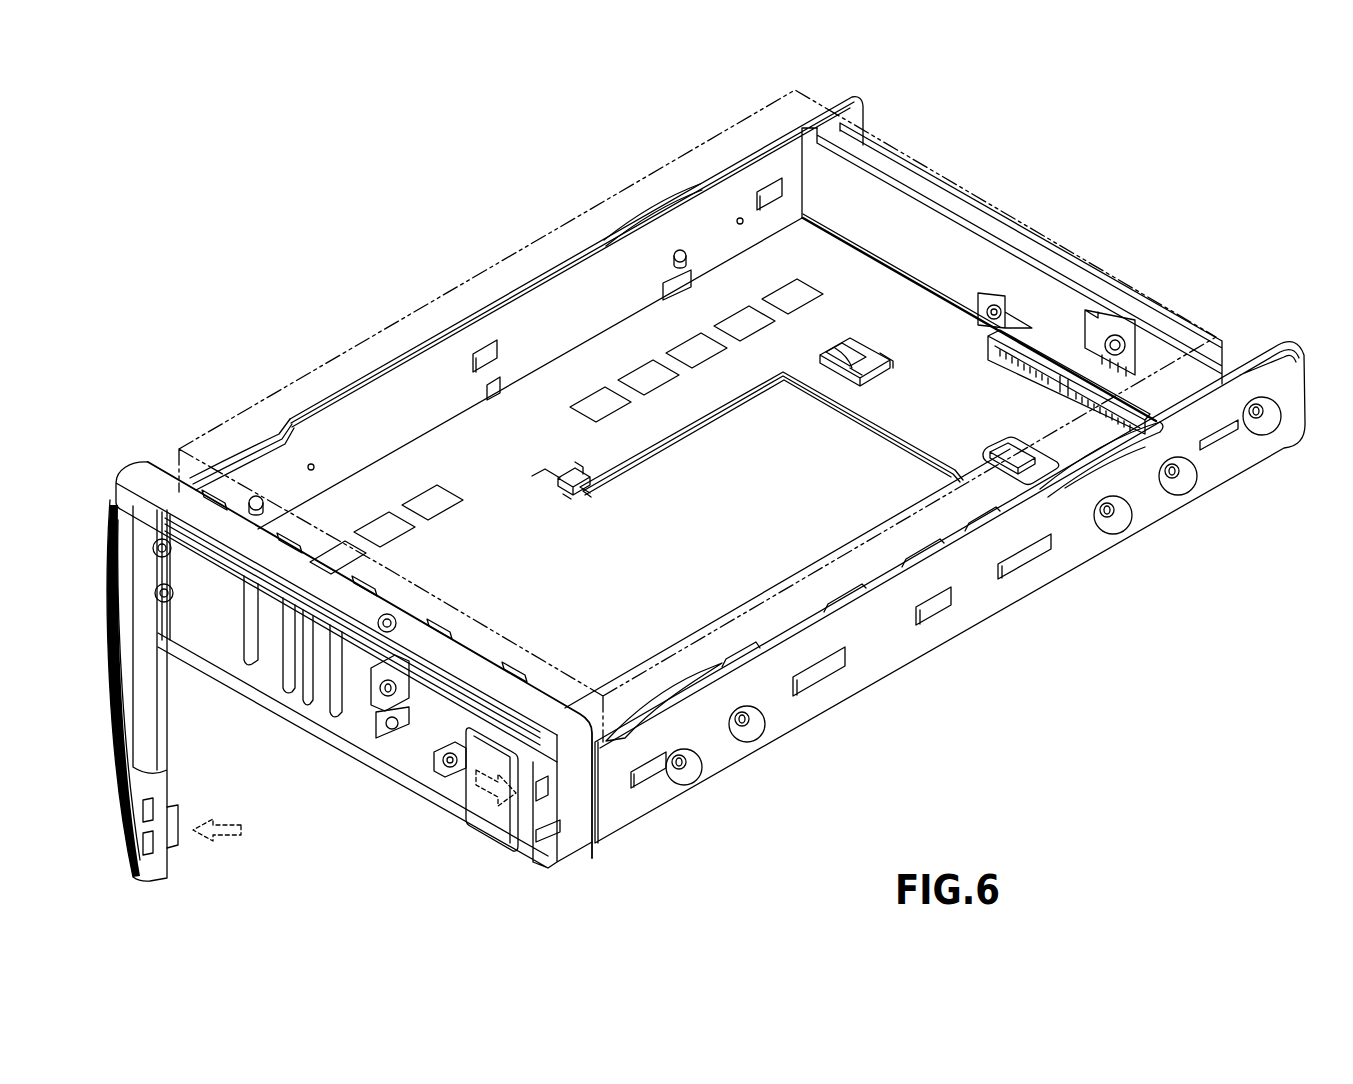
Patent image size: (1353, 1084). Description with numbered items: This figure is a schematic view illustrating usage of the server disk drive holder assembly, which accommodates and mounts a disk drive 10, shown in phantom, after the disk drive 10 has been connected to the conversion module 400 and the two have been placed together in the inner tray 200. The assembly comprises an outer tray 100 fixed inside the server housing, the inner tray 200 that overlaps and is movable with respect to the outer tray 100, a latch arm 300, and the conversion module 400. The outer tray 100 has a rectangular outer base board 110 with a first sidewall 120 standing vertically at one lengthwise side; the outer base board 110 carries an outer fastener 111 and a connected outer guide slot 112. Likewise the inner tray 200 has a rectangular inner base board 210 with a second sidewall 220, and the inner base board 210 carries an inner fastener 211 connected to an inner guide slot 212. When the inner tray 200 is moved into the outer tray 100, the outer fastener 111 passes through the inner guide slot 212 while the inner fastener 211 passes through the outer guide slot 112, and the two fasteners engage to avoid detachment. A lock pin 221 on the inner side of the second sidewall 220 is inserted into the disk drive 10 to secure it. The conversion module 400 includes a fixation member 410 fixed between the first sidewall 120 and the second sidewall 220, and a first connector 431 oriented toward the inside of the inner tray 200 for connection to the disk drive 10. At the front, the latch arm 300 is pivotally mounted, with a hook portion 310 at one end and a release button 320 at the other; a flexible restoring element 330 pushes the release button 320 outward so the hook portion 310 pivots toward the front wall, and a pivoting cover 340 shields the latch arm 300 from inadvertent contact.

The disk drive 10 is at (381, 335).
The outer tray 100 is at (950, 592).
The outer base board 110 is at (673, 437).
The outer fastener 111 is at (831, 340).
The outer guide slot 112 is at (857, 367).
The first sidewall 120 is at (995, 597).
The inner tray 200 is at (494, 282).
The inner base board 210 is at (670, 405).
The inner fastener 211 is at (848, 356).
The inner guide slot 212 is at (886, 362).
The second sidewall 220 is at (556, 300).
The lock pin 221 is at (680, 249).
The latch arm 300 is at (362, 694).
The hook portion 310 is at (276, 647).
The release button 320 is at (378, 710).
The flexible restoring element 330 is at (418, 716).
The cover 340 is at (157, 870).
The conversion module 400 is at (1019, 278).
The fixation member 410 is at (930, 237).
The first connector 431 is at (1056, 364).